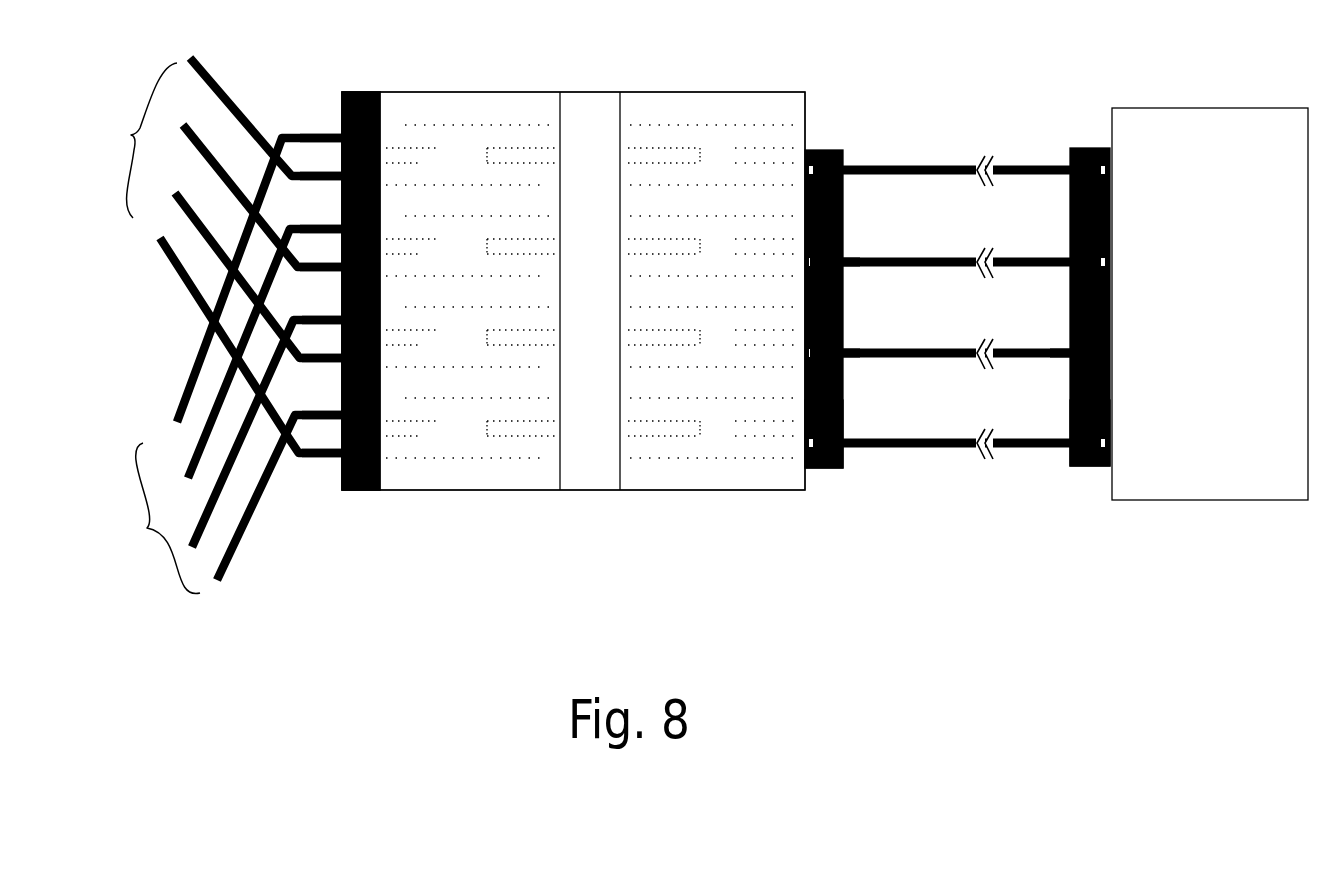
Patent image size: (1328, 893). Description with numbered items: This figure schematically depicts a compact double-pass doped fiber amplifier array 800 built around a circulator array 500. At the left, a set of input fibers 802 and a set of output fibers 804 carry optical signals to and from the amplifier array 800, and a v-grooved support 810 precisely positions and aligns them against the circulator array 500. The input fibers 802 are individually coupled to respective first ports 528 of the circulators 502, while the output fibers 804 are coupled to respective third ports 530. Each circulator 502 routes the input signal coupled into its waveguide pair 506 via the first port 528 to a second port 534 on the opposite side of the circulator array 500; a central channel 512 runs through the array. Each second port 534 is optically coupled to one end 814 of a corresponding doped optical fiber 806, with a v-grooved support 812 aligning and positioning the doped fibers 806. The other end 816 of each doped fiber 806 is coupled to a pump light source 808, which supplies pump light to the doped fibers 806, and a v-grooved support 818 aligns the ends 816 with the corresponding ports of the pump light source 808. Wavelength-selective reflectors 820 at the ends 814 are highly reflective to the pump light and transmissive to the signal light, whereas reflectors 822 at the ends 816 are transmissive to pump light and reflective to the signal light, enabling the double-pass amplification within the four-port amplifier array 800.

The amplifier array 800 is at (455, 642).
The circulator array 500 is at (440, 492).
The circulators 502 is at (483, 230).
The waveguide pairs 506 is at (518, 460).
The central channel 512 is at (588, 100).
The first ports 528 is at (350, 492).
The third ports 530 is at (338, 442).
The input fibers 802 is at (212, 255).
The output fibers 804 is at (221, 366).
The doped optical fibers 806 is at (887, 257).
The pump light source 808 is at (1193, 500).
The v-grooved support 810 is at (358, 93).
The v-grooved support 812 is at (814, 150).
The one end 814 is at (847, 455).
The other end 816 is at (1072, 455).
The v-grooved support 818 is at (1082, 148).
The reflectors 820 is at (843, 370).
The reflectors 822 is at (1068, 370).
The second ports 534 is at (842, 277).